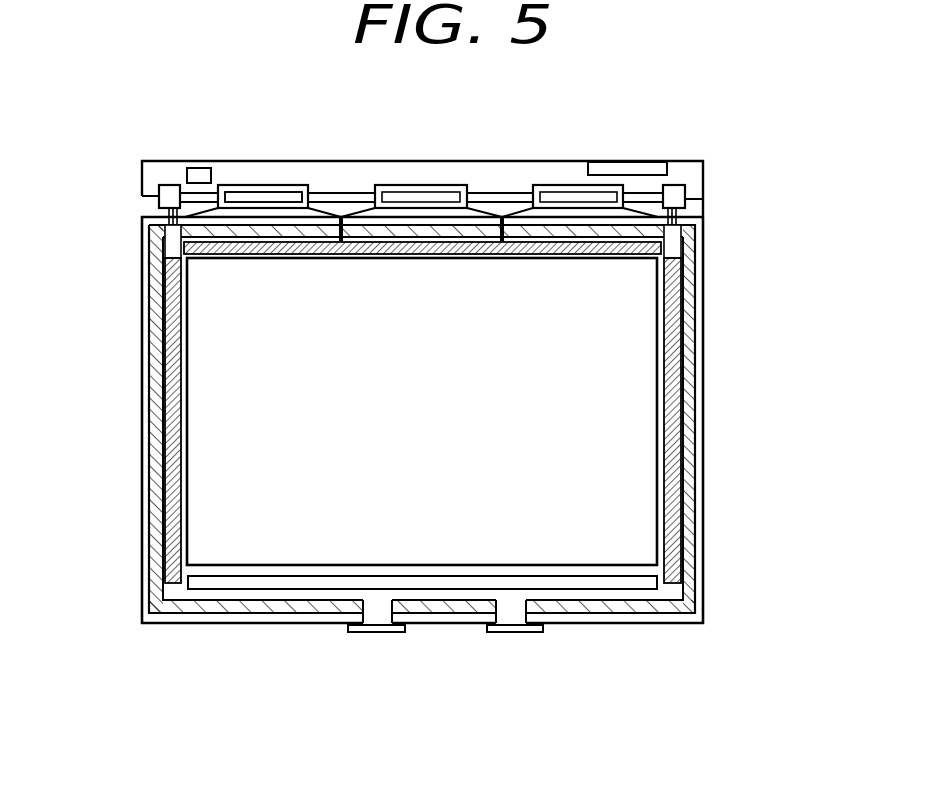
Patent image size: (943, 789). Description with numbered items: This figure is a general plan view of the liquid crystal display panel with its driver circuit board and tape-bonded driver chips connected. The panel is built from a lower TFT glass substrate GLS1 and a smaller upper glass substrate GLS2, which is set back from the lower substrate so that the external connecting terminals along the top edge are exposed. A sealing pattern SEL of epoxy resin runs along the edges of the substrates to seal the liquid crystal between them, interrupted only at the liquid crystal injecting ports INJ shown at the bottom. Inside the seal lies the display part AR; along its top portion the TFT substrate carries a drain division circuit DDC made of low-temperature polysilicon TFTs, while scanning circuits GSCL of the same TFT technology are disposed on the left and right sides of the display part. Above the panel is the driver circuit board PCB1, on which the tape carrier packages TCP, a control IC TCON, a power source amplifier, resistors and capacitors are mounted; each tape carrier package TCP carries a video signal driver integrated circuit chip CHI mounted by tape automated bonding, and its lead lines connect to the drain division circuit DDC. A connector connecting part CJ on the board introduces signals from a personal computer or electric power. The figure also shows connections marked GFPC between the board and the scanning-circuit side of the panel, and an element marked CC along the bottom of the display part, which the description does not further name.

The driver circuit board PCB1 is at (150, 176).
The control IC TCON is at (197, 168).
The connector connecting part CJ is at (630, 162).
The gate flexible printed circuit GFPC is at (168, 186).
The tape carrier package TCP is at (378, 185).
The integrated circuit chip CHI is at (260, 186).
The lower glass substrate GLS1 is at (693, 203).
The upper glass substrate GLS2 is at (702, 215).
The sealing pattern SEL is at (157, 320).
The scanning circuit GSCL is at (172, 399).
The drain division circuit DDC is at (483, 241).
The display part AR is at (422, 411).
The common contact CC is at (257, 582).
The liquid crystal injecting port INJ is at (515, 632).